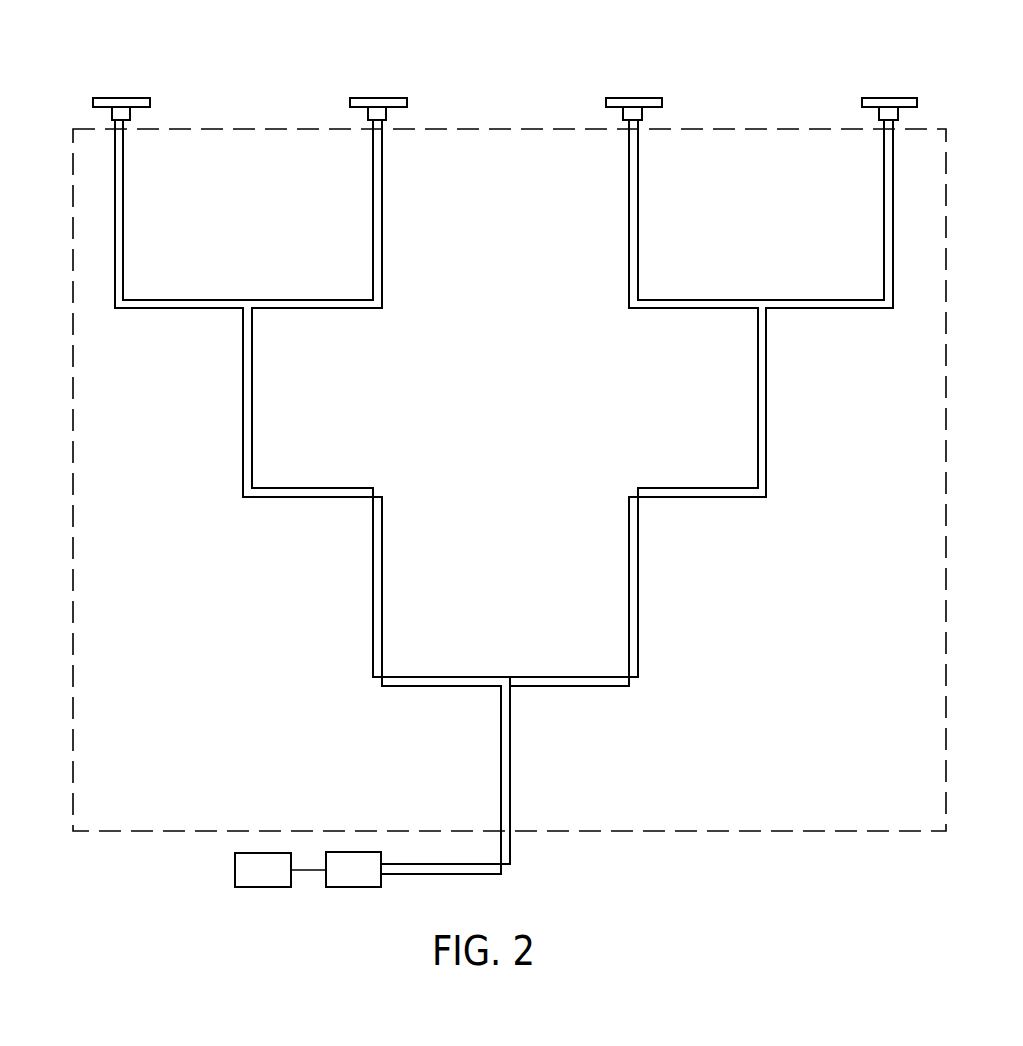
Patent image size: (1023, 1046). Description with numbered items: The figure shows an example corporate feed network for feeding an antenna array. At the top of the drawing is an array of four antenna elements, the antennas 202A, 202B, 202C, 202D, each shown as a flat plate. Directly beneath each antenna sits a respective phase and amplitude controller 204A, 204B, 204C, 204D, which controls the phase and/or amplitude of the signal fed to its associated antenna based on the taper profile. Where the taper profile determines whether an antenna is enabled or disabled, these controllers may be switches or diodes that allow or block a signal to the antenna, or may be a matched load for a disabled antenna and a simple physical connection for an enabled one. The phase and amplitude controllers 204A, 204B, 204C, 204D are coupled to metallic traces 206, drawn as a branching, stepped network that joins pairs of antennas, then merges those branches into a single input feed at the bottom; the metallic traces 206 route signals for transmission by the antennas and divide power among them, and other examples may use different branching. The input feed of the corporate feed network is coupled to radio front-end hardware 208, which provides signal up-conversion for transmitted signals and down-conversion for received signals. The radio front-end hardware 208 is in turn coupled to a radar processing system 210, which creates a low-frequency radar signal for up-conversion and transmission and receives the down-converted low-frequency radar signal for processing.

The antenna 202A is at (99, 98).
The antenna 202B is at (356, 98).
The antenna 202C is at (612, 98).
The antenna 202D is at (868, 98).
The phase and amplitude controller 204A is at (130, 113).
The phase and amplitude controller 204B is at (386, 113).
The phase and amplitude controller 204C is at (642, 113).
The phase and amplitude controller 204D is at (898, 113).
The metallic traces 206 is at (946, 483).
The radio front-end hardware 208 is at (368, 880).
The radar processing system 210 is at (277, 880).